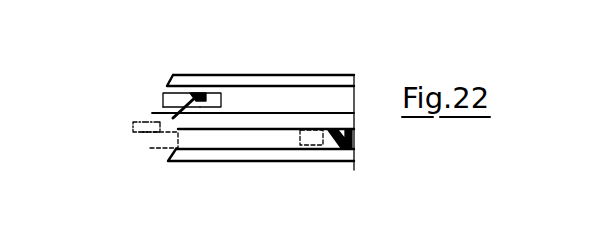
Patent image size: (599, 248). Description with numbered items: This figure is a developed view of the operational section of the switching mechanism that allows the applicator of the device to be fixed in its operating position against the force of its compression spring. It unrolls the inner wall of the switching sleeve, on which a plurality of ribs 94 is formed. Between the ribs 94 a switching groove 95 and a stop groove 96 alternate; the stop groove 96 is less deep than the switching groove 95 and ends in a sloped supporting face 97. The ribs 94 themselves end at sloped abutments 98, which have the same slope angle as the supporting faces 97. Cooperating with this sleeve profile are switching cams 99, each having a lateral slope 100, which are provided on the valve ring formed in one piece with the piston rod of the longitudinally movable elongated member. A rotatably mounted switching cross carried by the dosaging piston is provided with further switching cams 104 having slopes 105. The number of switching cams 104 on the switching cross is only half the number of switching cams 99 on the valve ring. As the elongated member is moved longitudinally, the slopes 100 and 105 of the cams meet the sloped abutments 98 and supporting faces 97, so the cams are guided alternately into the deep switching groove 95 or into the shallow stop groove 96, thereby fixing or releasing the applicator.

The ribs 94 is at (263, 83).
The switching groove 95 is at (263, 138).
The stop groove 96 is at (285, 100).
The supporting face 97 is at (163, 104).
The abutments 98 is at (172, 77).
The switching cams 99 is at (208, 97).
The lateral slope 100 is at (210, 117).
The switching cams 104 is at (170, 100).
The slopes 105 is at (183, 94).